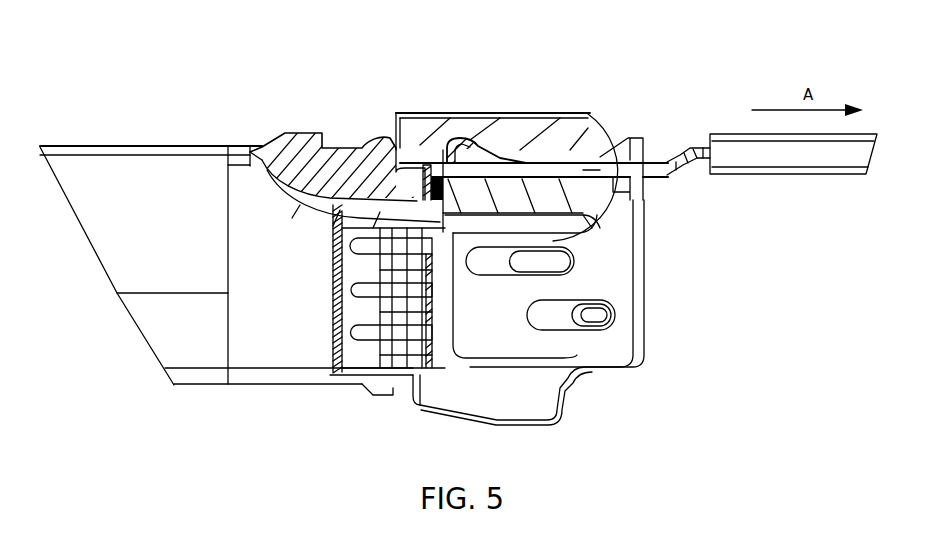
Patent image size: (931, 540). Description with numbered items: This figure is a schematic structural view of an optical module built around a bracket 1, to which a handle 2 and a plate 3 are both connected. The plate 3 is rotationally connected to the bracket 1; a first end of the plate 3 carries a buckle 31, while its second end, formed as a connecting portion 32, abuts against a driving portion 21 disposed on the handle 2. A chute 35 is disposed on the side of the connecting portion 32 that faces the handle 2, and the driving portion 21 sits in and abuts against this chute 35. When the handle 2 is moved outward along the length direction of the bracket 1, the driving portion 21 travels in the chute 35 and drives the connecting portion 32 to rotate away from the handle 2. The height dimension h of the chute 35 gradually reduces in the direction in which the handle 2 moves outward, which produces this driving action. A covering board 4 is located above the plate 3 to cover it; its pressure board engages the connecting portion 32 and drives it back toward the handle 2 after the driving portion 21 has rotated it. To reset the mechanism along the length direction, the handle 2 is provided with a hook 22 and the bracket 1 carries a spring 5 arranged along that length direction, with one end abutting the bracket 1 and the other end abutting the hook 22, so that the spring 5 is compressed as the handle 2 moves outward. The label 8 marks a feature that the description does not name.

The bracket 1 is at (436, 285).
The handle 2 is at (668, 176).
The driving portion 21 is at (505, 117).
The hook 22 is at (436, 200).
The plate 3 is at (435, 193).
The buckle 31 is at (303, 124).
The connecting portion 32 is at (505, 172).
The chute 35 is at (476, 130).
The covering board 4 is at (385, 177).
The spring 5 is at (430, 197).
The gap 8 is at (530, 156).
The height dimension h is at (535, 140).